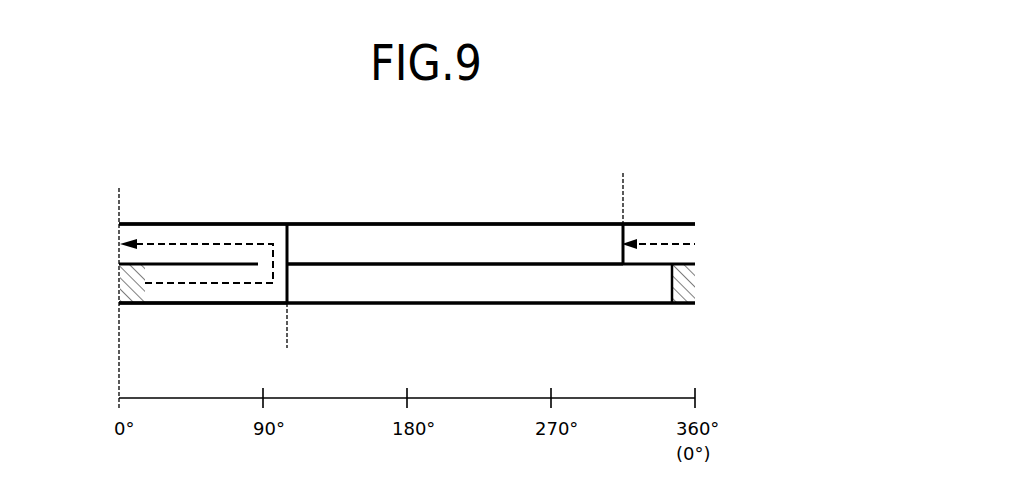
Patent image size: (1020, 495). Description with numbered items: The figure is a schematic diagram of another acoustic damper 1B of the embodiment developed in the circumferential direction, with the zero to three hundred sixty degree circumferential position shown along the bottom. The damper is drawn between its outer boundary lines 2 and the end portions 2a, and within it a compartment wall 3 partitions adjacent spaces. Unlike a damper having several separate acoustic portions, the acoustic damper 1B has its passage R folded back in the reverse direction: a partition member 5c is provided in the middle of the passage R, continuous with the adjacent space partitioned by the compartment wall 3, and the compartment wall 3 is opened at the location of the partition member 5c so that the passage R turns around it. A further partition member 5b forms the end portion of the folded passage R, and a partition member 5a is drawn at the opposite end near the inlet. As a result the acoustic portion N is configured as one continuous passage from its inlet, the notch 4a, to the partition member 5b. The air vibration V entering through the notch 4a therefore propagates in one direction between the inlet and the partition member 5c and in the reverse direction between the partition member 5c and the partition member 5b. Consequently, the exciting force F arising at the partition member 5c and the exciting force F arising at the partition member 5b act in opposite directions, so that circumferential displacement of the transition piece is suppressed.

The acoustic damper 1B is at (493, 175).
The fixing belt 2 is at (389, 224).
The belt edge portion 2a is at (434, 224).
The compartment wall 3 is at (337, 262).
The notch 4a is at (153, 304).
The first stopper portion 5a is at (671, 279).
The partition member 5b is at (626, 238).
The partition member 5c is at (298, 246).
The air vibration V is at (208, 243).
The acoustic portion N is at (215, 304).
The passage R is at (250, 304).
The exciting force F is at (623, 189).